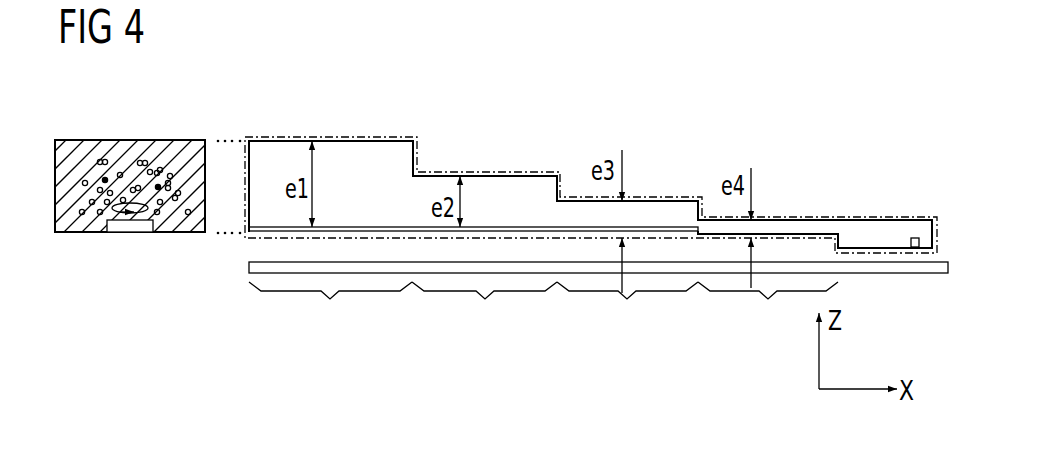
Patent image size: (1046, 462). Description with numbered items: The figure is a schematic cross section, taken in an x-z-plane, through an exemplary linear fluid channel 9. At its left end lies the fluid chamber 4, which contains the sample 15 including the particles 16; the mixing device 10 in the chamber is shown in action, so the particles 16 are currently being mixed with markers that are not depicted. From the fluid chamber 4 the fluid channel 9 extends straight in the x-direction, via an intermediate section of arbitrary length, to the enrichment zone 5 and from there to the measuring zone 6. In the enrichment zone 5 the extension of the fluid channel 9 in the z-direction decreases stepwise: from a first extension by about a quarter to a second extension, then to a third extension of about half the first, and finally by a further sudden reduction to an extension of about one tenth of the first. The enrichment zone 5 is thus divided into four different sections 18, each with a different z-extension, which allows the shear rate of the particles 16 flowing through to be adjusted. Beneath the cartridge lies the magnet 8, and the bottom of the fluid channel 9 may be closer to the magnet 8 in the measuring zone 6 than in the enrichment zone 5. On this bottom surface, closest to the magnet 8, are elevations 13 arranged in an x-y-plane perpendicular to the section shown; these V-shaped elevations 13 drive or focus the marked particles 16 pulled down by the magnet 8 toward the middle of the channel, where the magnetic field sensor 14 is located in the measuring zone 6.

The fluid chamber 4 is at (80, 152).
The enrichment zone 5 is at (356, 134).
The measuring zone 6 is at (877, 217).
The magnet 8 is at (249, 267).
The fluid channel 9 is at (271, 151).
The mixing device 10 is at (130, 228).
The elevations 13 is at (367, 226).
The magnetic field sensor 14 is at (916, 237).
The sample 15 is at (129, 157).
The particles 16 is at (143, 160).
The sections 18 is at (543, 307).